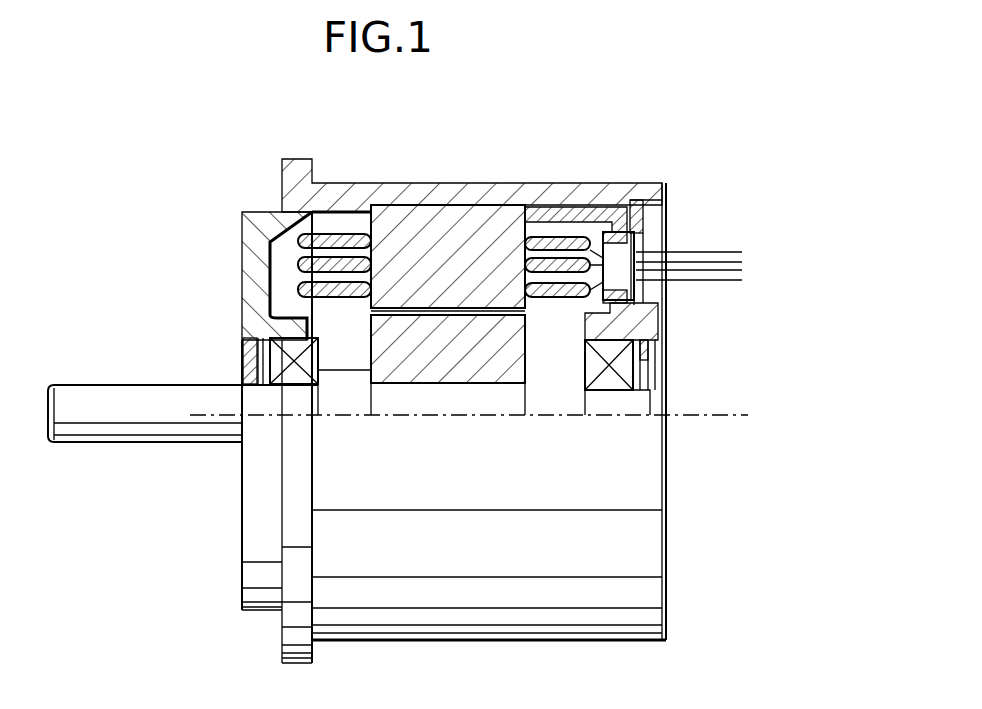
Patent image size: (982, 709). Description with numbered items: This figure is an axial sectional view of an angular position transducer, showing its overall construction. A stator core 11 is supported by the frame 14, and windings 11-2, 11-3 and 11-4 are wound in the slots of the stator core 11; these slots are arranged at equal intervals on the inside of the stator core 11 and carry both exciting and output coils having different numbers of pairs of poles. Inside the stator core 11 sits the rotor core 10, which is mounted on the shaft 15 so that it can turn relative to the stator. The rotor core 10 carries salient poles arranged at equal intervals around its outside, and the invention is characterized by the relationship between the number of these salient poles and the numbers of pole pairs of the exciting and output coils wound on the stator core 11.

The rotor core 10 is at (400, 372).
The stator core 11 is at (462, 220).
The winding 11-2 is at (307, 283).
The winding 11-3 is at (307, 267).
The winding 11-4 is at (282, 212).
The frame 14 is at (390, 192).
The shaft 15 is at (478, 403).